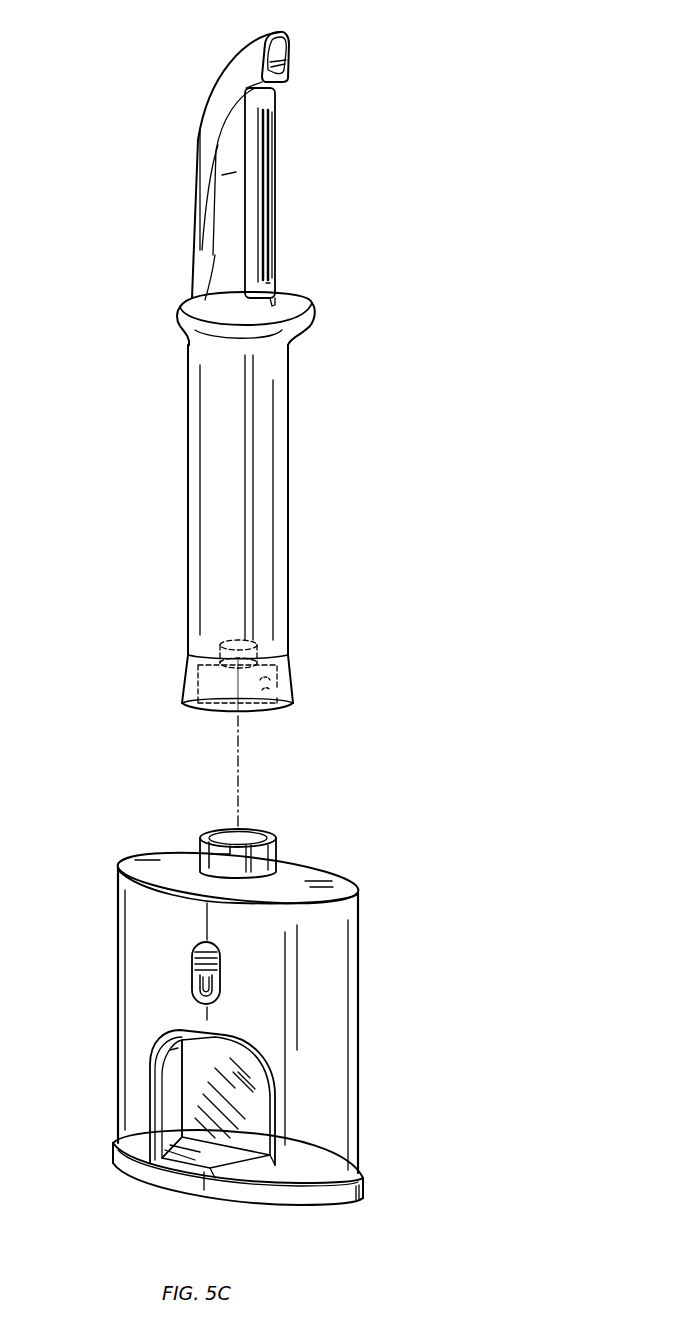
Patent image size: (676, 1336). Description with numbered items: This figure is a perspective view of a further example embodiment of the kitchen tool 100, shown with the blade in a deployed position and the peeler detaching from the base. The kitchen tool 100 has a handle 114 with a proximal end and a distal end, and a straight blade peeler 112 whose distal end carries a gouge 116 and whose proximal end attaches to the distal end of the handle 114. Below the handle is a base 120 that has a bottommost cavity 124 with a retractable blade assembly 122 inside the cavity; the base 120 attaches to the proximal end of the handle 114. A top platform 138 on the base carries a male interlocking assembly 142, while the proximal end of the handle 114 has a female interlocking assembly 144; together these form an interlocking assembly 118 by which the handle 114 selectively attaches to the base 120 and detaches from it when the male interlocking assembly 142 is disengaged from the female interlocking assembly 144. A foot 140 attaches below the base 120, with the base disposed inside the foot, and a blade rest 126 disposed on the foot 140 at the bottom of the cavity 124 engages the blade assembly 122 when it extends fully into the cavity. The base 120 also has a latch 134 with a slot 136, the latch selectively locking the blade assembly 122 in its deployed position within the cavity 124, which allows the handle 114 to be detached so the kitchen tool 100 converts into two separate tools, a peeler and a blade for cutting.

The kitchen tool 100 is at (377, 259).
The straight blade peeler 112 is at (276, 160).
The handle 114 is at (266, 527).
The gouge 116 is at (289, 62).
The interlocking assembly 118 is at (272, 722).
The base 120 is at (393, 1018).
The retractable blade assembly 122 is at (258, 1097).
The bottommost cavity 124 is at (165, 1097).
The blade rest 126 is at (248, 1172).
The latch 134 is at (190, 957).
The slot 136 is at (192, 995).
The top platform 138 is at (323, 882).
The foot 140 is at (345, 1197).
The male interlocking assembly 142 is at (278, 853).
The female interlocking assembly 144 is at (215, 688).